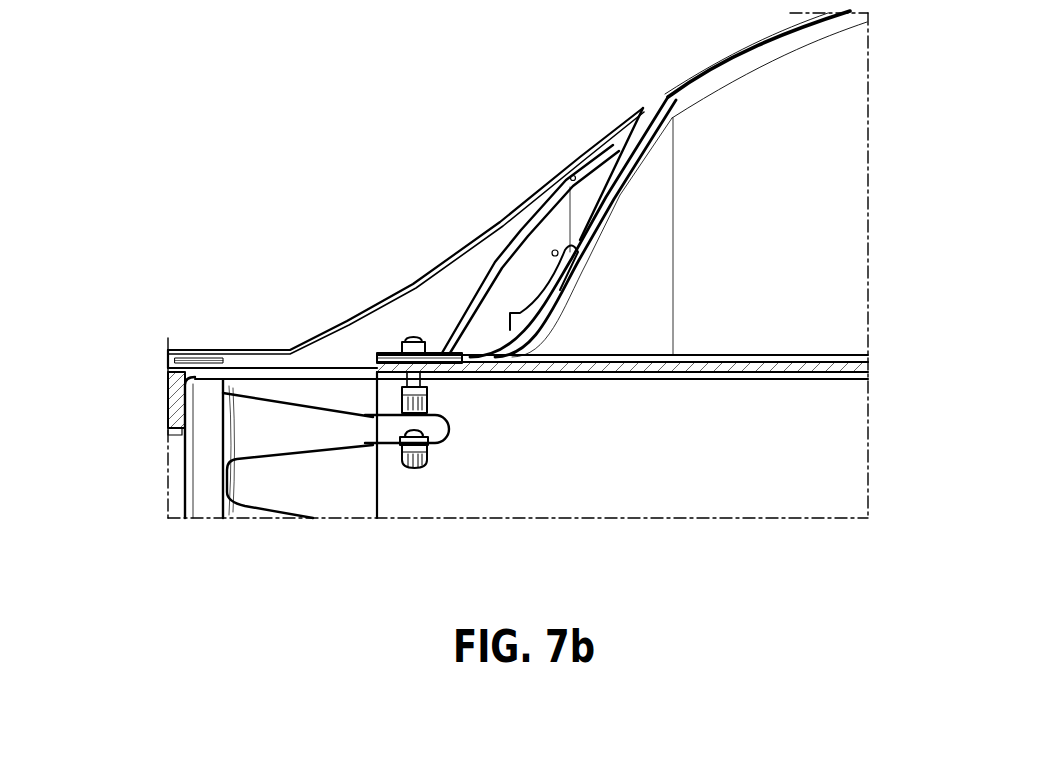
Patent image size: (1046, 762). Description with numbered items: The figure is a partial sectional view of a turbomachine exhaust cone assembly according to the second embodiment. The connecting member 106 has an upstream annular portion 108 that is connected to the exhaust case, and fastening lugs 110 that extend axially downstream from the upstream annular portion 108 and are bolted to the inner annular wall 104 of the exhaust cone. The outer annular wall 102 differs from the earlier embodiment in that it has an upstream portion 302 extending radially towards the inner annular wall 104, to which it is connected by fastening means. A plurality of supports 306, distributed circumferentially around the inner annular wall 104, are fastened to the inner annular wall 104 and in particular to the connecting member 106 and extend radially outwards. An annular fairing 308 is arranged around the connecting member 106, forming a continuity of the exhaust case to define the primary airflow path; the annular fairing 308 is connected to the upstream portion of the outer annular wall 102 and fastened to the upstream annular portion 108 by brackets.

The outer annular wall 102 is at (728, 60).
The inner annular wall 104 is at (818, 497).
The connecting member 106 is at (272, 532).
The upstream annular portion 108 is at (173, 450).
The fastening lugs 110 is at (248, 438).
The upstream portion 302 is at (608, 223).
The supports 306 is at (495, 267).
The annular fairing 308 is at (423, 287).